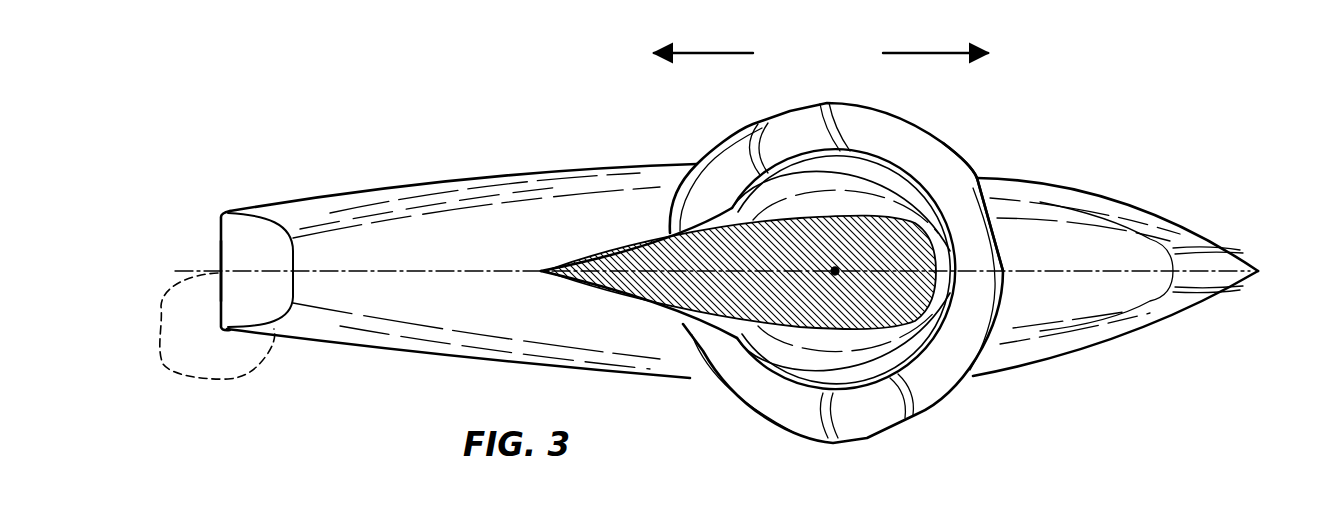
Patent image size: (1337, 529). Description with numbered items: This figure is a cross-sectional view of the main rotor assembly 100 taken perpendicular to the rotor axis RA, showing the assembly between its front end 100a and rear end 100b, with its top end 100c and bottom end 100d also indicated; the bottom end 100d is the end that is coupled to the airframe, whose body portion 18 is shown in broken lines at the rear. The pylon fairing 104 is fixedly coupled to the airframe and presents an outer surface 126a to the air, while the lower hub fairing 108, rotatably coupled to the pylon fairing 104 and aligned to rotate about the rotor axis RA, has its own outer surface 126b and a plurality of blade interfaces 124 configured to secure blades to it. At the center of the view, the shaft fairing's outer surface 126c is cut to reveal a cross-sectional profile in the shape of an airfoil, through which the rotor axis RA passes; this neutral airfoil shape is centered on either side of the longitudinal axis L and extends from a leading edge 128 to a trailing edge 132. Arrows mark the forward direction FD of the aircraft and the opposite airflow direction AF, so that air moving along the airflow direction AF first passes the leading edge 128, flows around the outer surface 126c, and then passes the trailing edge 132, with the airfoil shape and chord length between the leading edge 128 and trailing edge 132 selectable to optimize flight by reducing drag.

The main rotor assembly 100 is at (1060, 71).
The front end 100a is at (1172, 184).
The rear end 100b is at (198, 201).
The top end 100c is at (890, 18).
The bottom end 100d is at (208, 295).
The pylon fairing 104 is at (399, 253).
The lower hub fairing 108 is at (865, 263).
The blade interfaces 124 is at (776, 105).
The outer surface of the pylon fairing 126a is at (325, 226).
The outer surface of the lower hub fairing 126b is at (945, 134).
The outer surface of the shaft fairing 126c is at (651, 233).
The leading edge 128 is at (970, 183).
The trailing edge 132 is at (534, 260).
The body portion 18 is at (225, 351).
The longitudinal axis L is at (1072, 263).
The rotor axis RA is at (825, 261).
The airflow direction AF is at (685, 47).
The forward direction FD is at (937, 47).